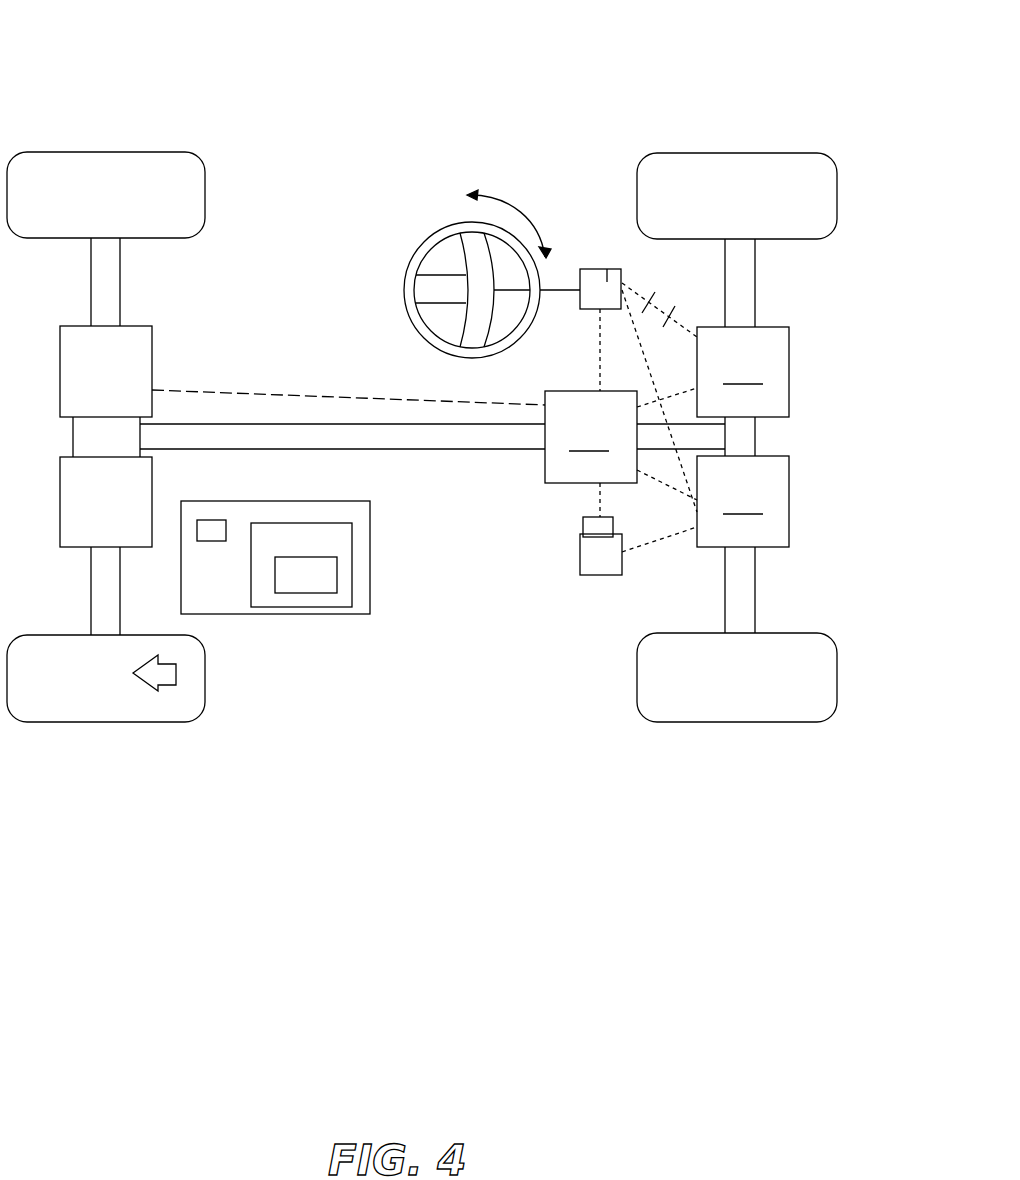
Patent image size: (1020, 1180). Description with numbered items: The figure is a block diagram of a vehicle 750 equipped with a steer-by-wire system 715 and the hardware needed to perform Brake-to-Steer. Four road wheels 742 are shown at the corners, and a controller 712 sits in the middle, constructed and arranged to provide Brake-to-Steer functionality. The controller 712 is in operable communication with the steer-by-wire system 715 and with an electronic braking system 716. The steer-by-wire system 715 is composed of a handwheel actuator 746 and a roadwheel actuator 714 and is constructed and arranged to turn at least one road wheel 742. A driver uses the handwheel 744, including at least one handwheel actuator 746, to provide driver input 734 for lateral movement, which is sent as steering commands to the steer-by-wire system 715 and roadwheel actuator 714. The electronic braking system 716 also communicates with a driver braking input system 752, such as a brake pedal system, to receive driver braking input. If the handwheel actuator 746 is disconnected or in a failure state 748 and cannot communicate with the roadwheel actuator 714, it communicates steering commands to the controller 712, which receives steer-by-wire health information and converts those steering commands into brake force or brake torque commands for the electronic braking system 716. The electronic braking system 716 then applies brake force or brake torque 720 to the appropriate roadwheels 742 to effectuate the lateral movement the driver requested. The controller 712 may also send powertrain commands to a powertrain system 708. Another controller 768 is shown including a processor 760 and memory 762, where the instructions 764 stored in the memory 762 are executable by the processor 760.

The vehicle 750 is at (232, 68).
The road wheel 742 is at (195, 200).
The powertrain system 708 is at (133, 367).
The brake force or brake torque 720 is at (157, 677).
The processor 760 is at (216, 520).
The memory 762 is at (352, 533).
The instructions 764 is at (337, 558).
The controller 768 is at (370, 581).
The controller 712 is at (591, 437).
The roadwheel actuator 714 is at (743, 372).
The electronic braking system 716 is at (743, 501).
The driver braking input system 752 is at (597, 553).
The handwheel 744 is at (431, 236).
The driver input 734 is at (513, 200).
The handwheel actuator 746 is at (660, 307).
The failure state 748 is at (607, 269).
The steer-by-wire system 715 is at (582, 312).